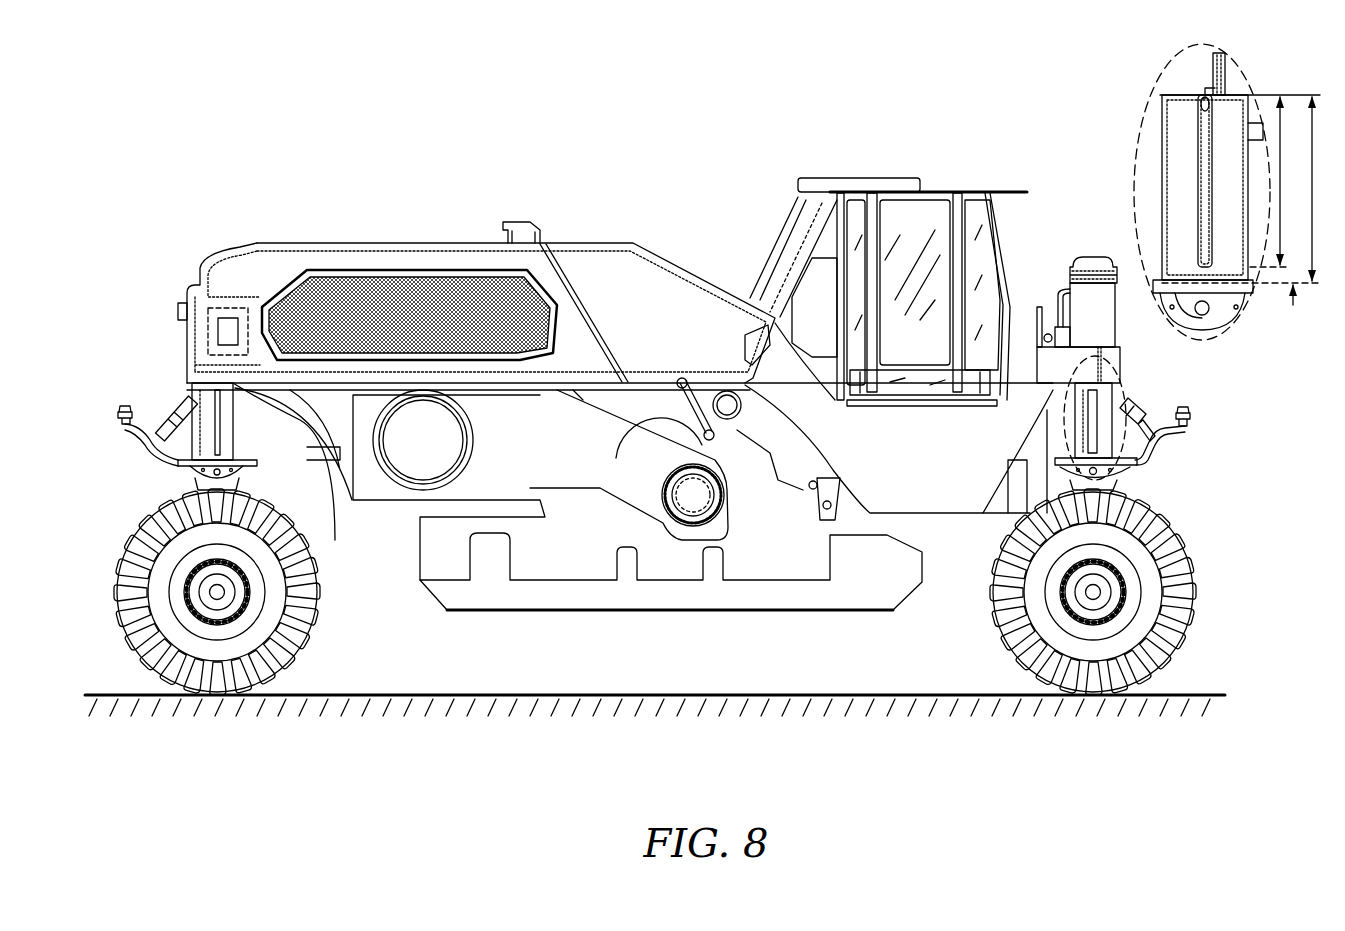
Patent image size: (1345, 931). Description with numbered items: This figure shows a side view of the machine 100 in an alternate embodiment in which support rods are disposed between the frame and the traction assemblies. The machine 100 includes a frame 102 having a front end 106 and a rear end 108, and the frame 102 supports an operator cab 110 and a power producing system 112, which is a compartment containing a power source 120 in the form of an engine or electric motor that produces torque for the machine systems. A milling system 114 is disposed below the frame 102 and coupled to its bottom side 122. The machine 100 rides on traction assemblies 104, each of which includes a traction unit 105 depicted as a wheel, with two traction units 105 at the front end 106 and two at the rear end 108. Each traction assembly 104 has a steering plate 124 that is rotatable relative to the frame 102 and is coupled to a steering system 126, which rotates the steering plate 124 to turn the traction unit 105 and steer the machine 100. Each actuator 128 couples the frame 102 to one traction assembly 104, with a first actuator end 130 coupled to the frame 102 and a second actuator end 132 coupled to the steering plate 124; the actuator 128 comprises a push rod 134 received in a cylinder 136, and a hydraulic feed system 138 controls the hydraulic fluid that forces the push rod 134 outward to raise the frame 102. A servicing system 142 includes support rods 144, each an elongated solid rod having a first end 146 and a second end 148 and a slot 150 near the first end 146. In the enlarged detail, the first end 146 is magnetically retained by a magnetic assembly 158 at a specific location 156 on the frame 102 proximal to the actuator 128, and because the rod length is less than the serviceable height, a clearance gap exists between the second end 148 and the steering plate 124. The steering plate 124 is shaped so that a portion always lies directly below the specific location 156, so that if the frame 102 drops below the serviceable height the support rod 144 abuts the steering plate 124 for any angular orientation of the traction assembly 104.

The machine 100 is at (290, 142).
The frame 102 is at (393, 392).
The traction assembly 104 is at (150, 500).
The traction unit 105 is at (228, 697).
The front end 106 is at (1102, 382).
The rear end 108 is at (196, 377).
The operator cab 110 is at (972, 192).
The power producing system 112 is at (248, 305).
The milling system 114 is at (600, 612).
The power source 120 is at (228, 318).
The bottom side 122 is at (957, 540).
The steering plate 124 is at (170, 470).
The steering system 126 is at (187, 427).
The actuator 128 is at (150, 420).
The first actuator end 130 is at (1060, 396).
The second actuator end 132 is at (1133, 480).
The push rod 134 is at (232, 393).
The cylinder 136 is at (1125, 300).
The hydraulic feed system 138 is at (1068, 295).
The servicing system 142 is at (193, 403).
The support rod 144 is at (222, 437).
The first end 146 is at (1278, 62).
The second end 148 is at (168, 463).
The slot 150 is at (1200, 104).
The specific location 156 is at (1212, 93).
The magnetic assembly 158 is at (1202, 90).